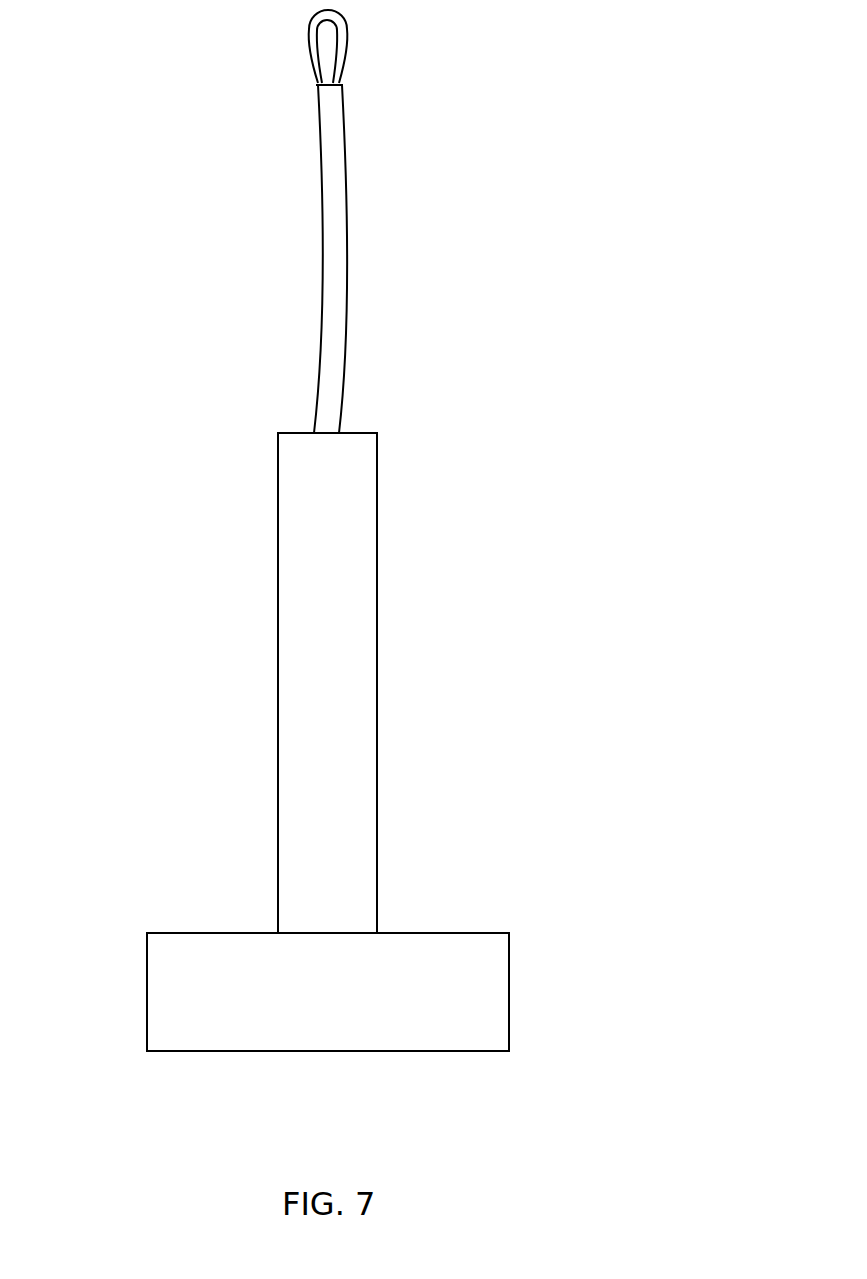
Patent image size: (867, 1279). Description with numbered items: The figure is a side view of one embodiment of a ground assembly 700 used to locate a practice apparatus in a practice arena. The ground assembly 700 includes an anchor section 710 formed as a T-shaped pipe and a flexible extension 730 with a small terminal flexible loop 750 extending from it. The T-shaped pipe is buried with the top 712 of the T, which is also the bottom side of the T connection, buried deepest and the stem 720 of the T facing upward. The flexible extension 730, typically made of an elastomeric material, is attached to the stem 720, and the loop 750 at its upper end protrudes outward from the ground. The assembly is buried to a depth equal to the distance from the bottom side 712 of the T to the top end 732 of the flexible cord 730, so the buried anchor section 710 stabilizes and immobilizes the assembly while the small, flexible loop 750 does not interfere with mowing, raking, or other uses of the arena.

The ground assembly 700 is at (136, 579).
The anchor section 710 is at (185, 931).
The top of the T 712 is at (457, 1052).
The stem of the T 720 is at (378, 703).
The flexible extension 730 is at (322, 242).
The top end of the flexible cord 732 is at (316, 85).
The flexible loop 750 is at (348, 38).